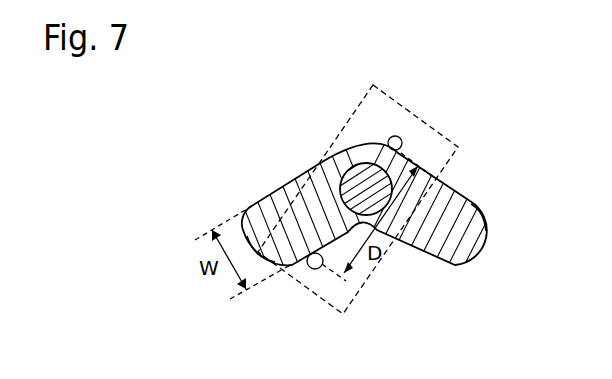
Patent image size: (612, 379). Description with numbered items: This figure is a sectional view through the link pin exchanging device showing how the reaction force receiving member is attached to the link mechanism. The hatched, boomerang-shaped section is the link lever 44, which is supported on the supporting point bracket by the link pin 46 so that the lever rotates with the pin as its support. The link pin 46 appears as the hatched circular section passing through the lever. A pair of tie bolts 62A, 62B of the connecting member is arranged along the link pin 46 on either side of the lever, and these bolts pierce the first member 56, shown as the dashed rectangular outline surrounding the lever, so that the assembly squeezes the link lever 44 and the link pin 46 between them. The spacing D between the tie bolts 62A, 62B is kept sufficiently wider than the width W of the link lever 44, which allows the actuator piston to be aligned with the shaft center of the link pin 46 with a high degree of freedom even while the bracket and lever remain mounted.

The link lever 44 is at (468, 267).
The link pin 46 is at (345, 176).
The first member 56 is at (398, 103).
The tie bolt 62A is at (403, 146).
The tie bolt 62B is at (315, 269).